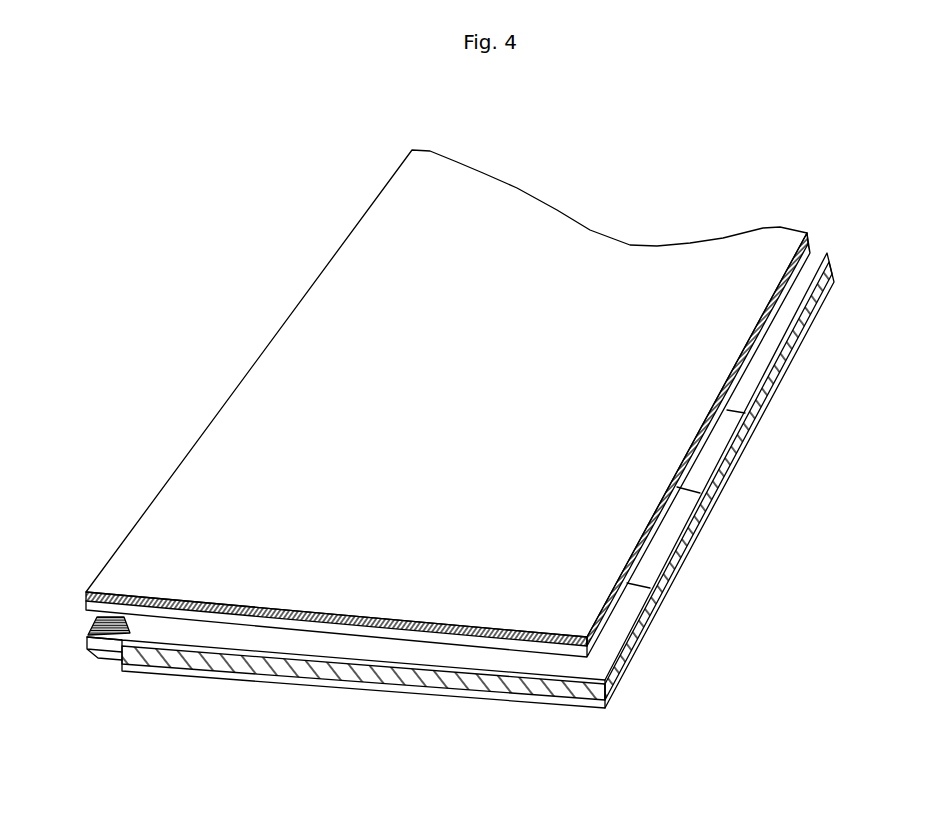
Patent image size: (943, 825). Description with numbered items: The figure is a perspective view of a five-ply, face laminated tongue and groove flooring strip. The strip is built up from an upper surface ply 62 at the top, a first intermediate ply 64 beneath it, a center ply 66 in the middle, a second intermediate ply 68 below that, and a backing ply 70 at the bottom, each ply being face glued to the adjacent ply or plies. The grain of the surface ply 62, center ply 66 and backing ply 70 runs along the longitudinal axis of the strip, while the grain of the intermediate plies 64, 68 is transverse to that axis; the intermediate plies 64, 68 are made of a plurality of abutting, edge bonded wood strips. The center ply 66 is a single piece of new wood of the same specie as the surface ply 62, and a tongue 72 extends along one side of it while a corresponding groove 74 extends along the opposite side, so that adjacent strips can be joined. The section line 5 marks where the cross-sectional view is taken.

The section line of FIG. 5 is at (203, 365).
The upper surface ply 62 is at (193, 497).
The first intermediate ply 64 is at (86, 603).
The center ply 66 is at (543, 688).
The second intermediate ply 68 is at (173, 668).
The backing ply 70 is at (102, 652).
The tongue 72 is at (643, 672).
The groove 74 is at (81, 628).